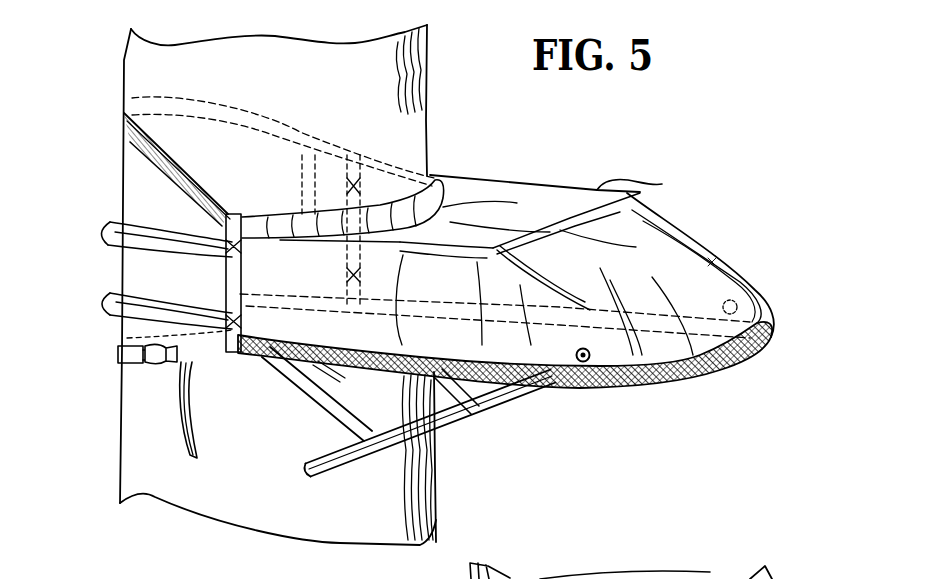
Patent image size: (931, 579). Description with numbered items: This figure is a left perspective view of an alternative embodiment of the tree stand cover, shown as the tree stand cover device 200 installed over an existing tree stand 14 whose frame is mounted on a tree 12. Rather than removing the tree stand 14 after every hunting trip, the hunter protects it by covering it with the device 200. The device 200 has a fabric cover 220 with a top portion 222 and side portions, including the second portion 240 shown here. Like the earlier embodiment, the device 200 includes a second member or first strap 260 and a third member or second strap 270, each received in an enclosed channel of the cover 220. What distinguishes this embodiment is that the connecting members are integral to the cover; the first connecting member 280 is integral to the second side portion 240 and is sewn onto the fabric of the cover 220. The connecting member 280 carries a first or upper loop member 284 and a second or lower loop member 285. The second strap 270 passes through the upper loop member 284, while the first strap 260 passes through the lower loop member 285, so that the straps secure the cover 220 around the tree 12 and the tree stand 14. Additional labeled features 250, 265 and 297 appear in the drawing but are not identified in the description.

The tree 12 is at (430, 88).
The tree stand 14 is at (104, 240).
The tree stand cover device 200 is at (715, 118).
The cover 220 is at (571, 192).
The top portion 222 is at (662, 184).
The second portion 240 is at (555, 386).
The rounded platform end 250 is at (707, 278).
The first strap 260 is at (118, 352).
The strap free end 265 is at (143, 366).
The second strap 270 is at (123, 135).
The first connecting member 280 is at (224, 285).
The upper loop member 284 is at (233, 213).
The lower loop member 285 is at (233, 362).
The padded platform edge 297 is at (718, 367).